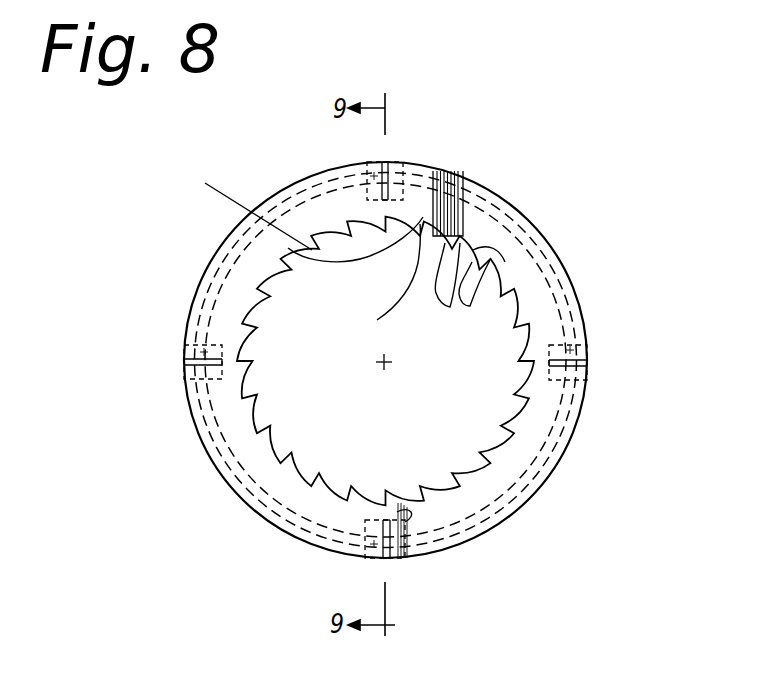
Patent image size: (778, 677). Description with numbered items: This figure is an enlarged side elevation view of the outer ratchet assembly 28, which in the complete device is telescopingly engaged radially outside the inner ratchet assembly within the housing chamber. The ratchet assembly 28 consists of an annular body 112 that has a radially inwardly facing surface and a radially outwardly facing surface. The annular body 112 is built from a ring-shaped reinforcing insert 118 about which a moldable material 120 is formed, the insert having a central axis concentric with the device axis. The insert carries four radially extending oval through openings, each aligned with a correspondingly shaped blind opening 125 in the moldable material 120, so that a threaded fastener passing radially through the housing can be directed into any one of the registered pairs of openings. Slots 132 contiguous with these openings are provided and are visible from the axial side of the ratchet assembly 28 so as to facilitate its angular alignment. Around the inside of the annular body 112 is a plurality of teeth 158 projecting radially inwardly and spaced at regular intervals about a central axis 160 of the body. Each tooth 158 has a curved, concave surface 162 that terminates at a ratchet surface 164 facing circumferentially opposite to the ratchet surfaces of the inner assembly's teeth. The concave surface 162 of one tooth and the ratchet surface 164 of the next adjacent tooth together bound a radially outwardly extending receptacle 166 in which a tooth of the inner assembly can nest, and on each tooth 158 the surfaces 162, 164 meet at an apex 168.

The ratchet assembly 28 is at (322, 214).
The annular body 112 is at (538, 308).
The ring-shaped reinforcing insert 118 is at (470, 546).
The moldable material 120 is at (505, 460).
The blind openings 125 is at (383, 165).
The slots 132 is at (407, 163).
The teeth 158 is at (461, 291).
The central axis 160 is at (392, 362).
The curved, concave surface 162 is at (421, 240).
The ratchet surface 164 is at (473, 250).
The receptacle 166 is at (205, 183).
The apex 168 is at (380, 321).